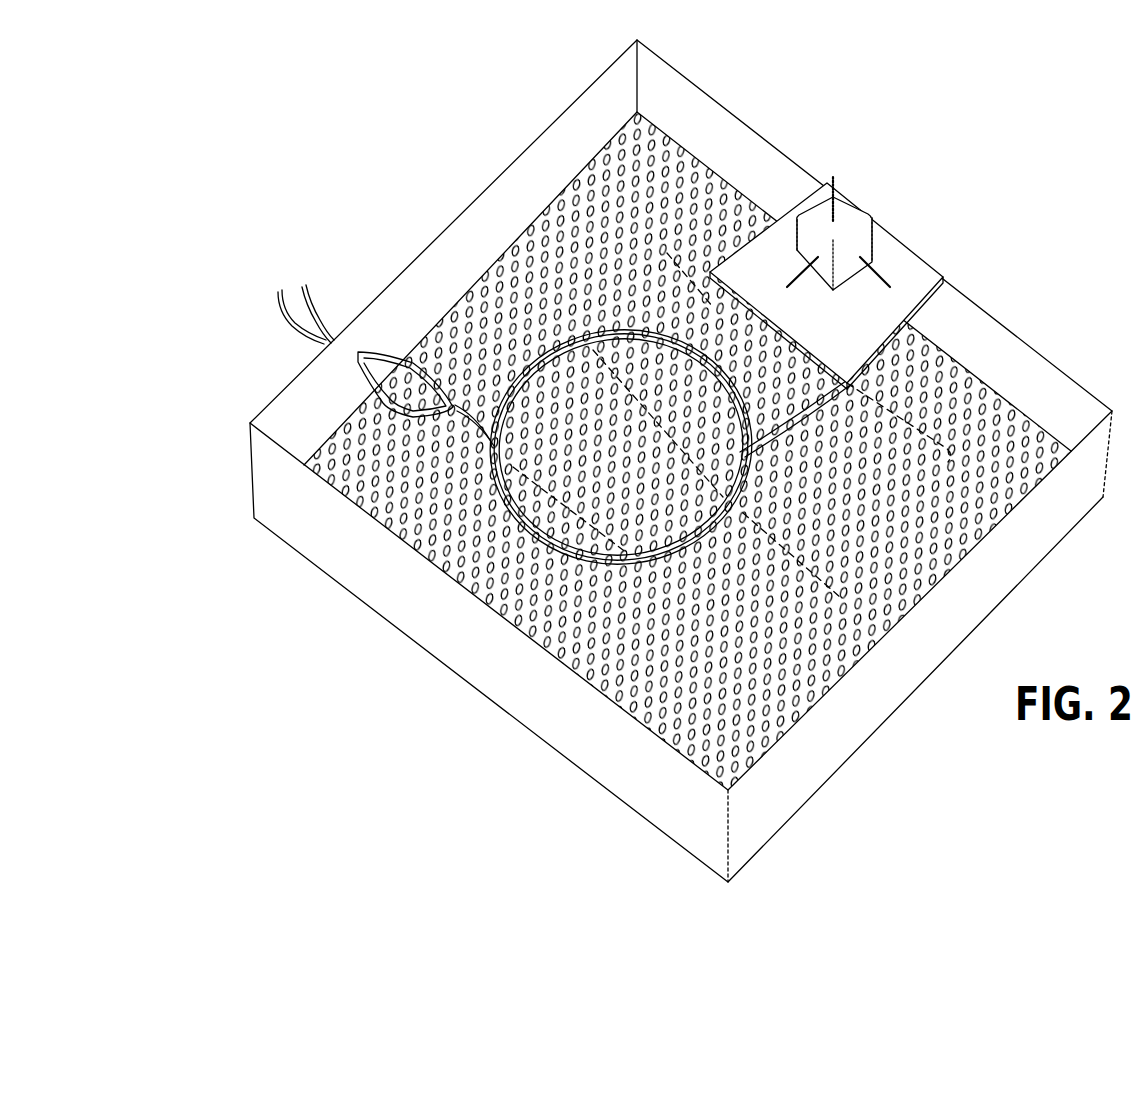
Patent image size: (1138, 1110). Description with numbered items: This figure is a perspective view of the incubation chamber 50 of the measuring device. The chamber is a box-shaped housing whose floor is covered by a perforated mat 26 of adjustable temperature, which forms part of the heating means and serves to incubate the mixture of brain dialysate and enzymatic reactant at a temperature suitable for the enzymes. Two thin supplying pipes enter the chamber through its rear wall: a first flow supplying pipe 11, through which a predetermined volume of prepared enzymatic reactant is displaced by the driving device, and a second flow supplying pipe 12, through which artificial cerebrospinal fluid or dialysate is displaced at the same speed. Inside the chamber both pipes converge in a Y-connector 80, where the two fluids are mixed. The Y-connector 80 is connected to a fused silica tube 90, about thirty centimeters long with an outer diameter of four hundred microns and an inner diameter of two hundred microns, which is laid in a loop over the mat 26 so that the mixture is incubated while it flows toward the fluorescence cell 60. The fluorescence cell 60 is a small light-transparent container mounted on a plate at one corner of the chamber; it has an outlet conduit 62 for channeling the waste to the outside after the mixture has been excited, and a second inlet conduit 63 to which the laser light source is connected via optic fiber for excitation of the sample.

The first flow supplying pipe 11 is at (281, 304).
The second flow supplying pipe 12 is at (309, 285).
The mat 26 is at (838, 649).
The incubation chamber 50 is at (441, 645).
The fluorescence cell 60 is at (814, 205).
The outlet conduit 62 is at (838, 183).
The second inlet conduit 63 is at (880, 257).
The Y-connector 80 is at (455, 403).
The fused silica tube 90 is at (553, 568).